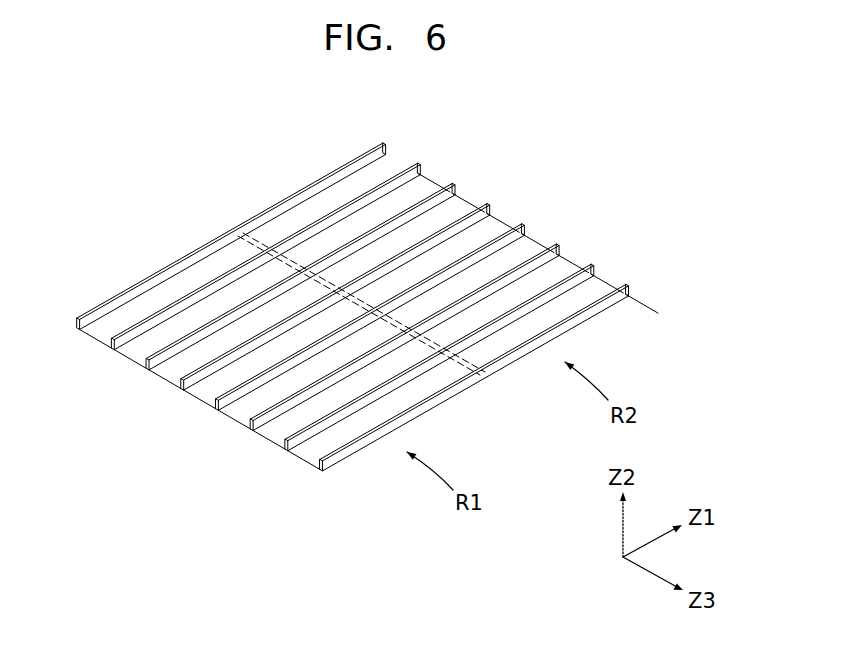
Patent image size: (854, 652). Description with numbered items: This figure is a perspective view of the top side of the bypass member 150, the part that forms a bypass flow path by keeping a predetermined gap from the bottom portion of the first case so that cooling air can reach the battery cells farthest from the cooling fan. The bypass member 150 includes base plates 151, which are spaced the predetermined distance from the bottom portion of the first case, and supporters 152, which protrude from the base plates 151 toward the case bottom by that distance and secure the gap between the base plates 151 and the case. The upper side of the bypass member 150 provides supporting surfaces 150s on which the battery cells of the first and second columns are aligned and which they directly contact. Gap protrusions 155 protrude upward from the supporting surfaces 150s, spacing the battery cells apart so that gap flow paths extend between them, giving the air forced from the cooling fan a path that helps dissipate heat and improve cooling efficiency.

The bypass member 150 is at (613, 197).
The supporting surfaces 150s is at (167, 292).
The base plates 151 is at (152, 337).
The supporters 152 is at (180, 382).
The gap protrusions 155 is at (497, 242).